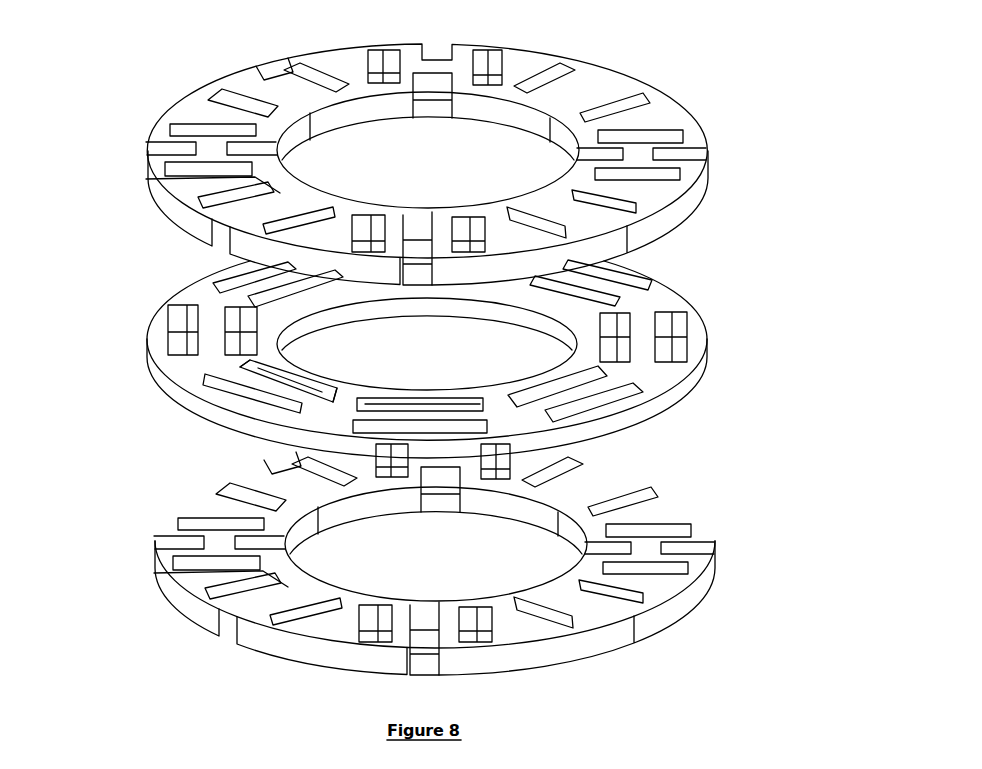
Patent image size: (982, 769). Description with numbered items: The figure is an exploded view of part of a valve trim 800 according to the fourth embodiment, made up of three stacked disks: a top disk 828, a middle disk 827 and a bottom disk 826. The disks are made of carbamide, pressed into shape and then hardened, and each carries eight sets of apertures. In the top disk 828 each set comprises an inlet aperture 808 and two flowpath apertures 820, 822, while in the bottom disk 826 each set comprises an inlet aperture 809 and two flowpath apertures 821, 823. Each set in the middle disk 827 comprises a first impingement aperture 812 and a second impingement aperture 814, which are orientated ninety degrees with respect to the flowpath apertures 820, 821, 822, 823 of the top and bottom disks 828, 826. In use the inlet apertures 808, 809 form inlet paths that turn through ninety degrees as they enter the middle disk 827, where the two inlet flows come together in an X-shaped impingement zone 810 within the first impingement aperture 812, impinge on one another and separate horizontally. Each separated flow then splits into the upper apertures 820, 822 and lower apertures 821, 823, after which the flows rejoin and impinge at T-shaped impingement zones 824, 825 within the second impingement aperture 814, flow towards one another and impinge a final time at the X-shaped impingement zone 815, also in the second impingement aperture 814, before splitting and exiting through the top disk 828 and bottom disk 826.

The valve trim 800 is at (713, 32).
The inlet aperture 808 is at (216, 246).
The inlet aperture 809 is at (240, 640).
The impingement zone 810 is at (253, 394).
The first impingement aperture 812 is at (185, 335).
The second impingement aperture 814 is at (242, 320).
The impingement zone 815 is at (290, 376).
The flowpath aperture 820 is at (240, 195).
The flowpath aperture 821 is at (228, 590).
The flowpath aperture 822 is at (285, 223).
The flowpath aperture 823 is at (292, 621).
The T-shaped impingement zone 824 is at (258, 363).
The T-shaped impingement zone 825 is at (326, 393).
The bottom disk 826 is at (708, 528).
The middle disk 827 is at (705, 312).
The top disk 828 is at (706, 128).